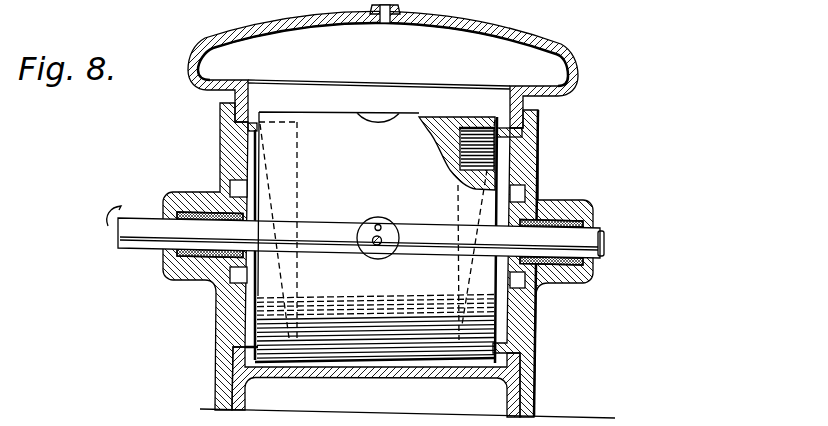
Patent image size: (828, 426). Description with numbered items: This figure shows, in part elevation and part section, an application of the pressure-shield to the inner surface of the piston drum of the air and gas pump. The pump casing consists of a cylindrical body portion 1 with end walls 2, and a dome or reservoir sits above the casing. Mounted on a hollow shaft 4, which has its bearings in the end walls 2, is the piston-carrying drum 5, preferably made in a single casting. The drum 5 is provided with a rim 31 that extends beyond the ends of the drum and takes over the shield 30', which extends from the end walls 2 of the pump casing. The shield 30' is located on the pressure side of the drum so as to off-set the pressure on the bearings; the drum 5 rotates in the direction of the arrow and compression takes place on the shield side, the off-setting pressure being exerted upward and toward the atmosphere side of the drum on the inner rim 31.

The cylindrical body portion 1 is at (387, 373).
The end walls 2 is at (528, 152).
The hollow shaft 4 is at (589, 243).
The piston-carrying drum 5 is at (376, 226).
The shield 30' is at (418, 329).
The rim 31 is at (481, 121).